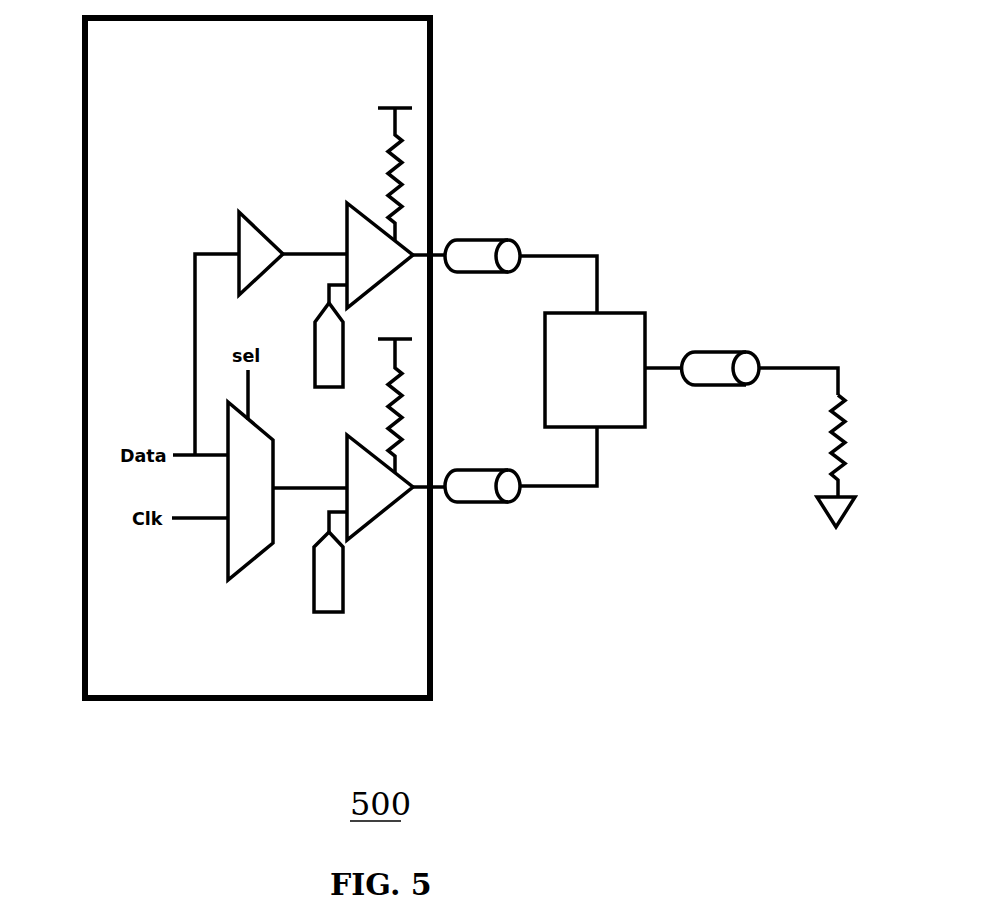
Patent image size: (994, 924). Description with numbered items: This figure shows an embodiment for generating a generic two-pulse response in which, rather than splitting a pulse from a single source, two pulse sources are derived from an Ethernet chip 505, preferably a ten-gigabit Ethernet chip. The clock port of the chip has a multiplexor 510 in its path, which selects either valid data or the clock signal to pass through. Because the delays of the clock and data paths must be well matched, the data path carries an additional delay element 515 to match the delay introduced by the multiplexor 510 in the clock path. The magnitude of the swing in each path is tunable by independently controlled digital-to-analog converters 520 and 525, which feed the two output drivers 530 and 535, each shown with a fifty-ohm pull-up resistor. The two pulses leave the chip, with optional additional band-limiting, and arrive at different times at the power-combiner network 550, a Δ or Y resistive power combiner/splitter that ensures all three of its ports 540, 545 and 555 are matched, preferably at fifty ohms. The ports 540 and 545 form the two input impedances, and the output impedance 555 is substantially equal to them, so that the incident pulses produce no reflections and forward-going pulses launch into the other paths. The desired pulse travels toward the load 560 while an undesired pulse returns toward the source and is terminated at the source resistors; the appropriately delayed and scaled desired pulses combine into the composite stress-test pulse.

The Ethernet chip 505 is at (225, 358).
The multiplexor 510 is at (287, 491).
The delay element 515 is at (271, 333).
The digital-to-analog converter 520 is at (313, 336).
The digital-to-analog converter 525 is at (354, 562).
The output driver 530 is at (391, 208).
The output driver 535 is at (391, 439).
The port 540 is at (521, 252).
The port 545 is at (521, 490).
The power-combiner network 550 is at (595, 370).
The port 555 is at (741, 345).
The load 560 is at (852, 461).